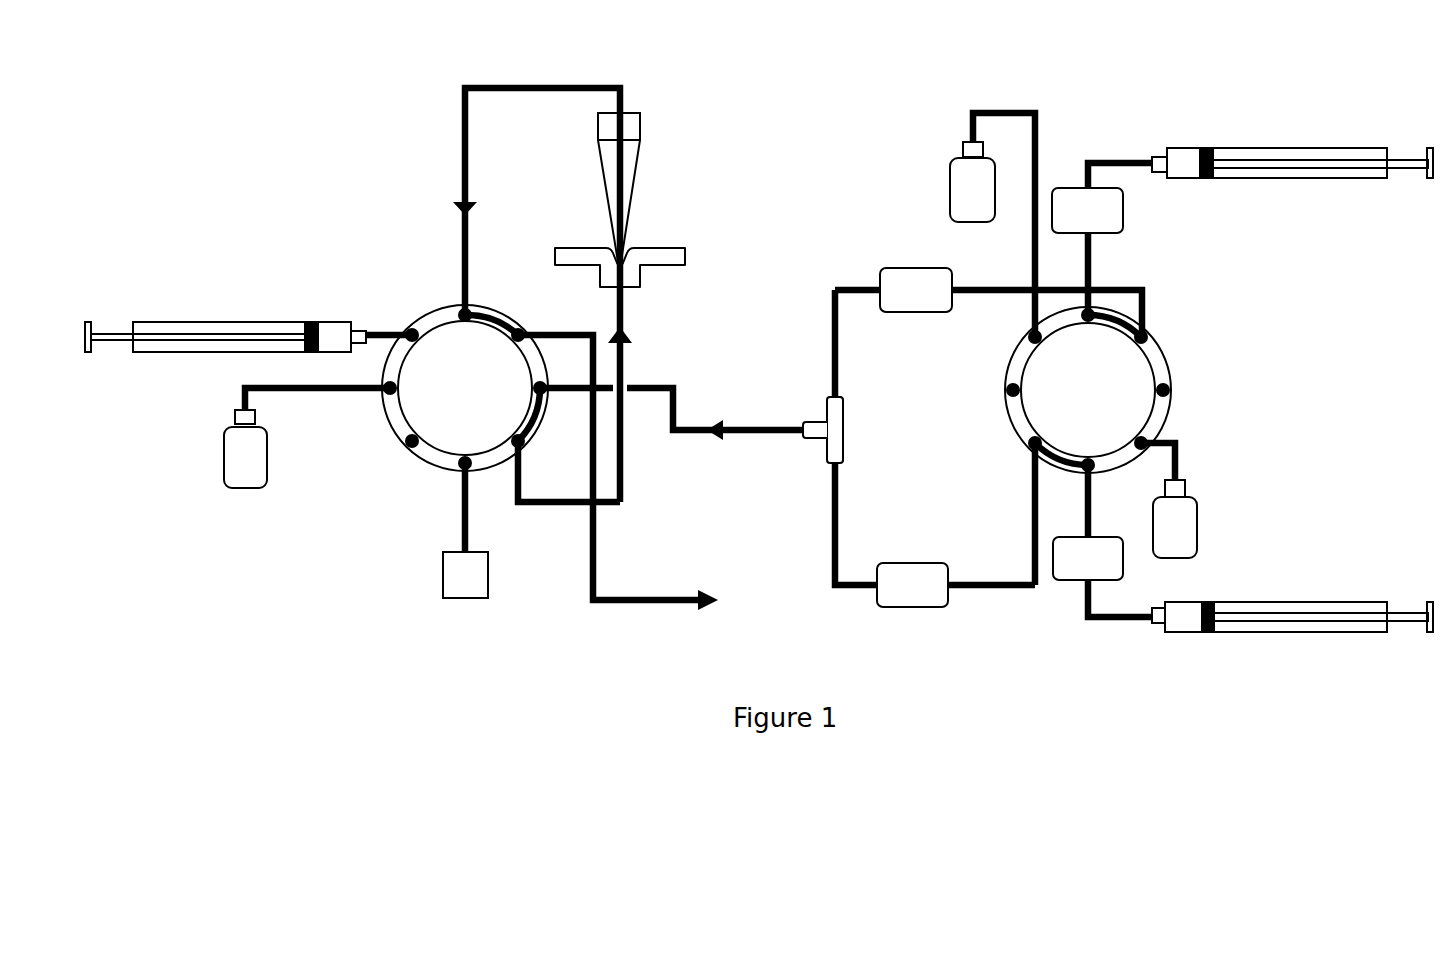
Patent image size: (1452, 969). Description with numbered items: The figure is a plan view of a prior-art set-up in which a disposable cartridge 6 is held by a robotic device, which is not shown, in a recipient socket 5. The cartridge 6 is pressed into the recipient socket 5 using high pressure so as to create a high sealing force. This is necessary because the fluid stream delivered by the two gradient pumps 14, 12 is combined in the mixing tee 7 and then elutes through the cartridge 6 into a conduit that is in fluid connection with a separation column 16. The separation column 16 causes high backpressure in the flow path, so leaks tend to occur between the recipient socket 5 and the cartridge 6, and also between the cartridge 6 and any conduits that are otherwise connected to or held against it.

The recipient socket 5 is at (620, 271).
The disposable cartridge 6 is at (637, 190).
The mixing tee 7 is at (839, 430).
The gradient pump 12 is at (1292, 599).
The gradient pump 14 is at (1292, 148).
The separation column 16 is at (655, 569).